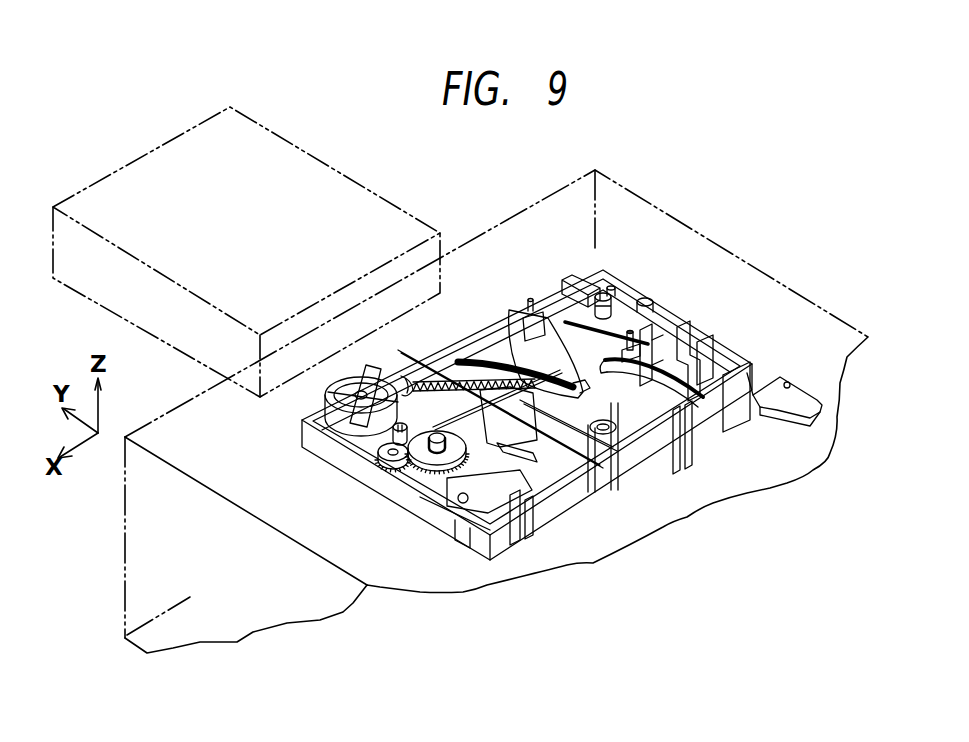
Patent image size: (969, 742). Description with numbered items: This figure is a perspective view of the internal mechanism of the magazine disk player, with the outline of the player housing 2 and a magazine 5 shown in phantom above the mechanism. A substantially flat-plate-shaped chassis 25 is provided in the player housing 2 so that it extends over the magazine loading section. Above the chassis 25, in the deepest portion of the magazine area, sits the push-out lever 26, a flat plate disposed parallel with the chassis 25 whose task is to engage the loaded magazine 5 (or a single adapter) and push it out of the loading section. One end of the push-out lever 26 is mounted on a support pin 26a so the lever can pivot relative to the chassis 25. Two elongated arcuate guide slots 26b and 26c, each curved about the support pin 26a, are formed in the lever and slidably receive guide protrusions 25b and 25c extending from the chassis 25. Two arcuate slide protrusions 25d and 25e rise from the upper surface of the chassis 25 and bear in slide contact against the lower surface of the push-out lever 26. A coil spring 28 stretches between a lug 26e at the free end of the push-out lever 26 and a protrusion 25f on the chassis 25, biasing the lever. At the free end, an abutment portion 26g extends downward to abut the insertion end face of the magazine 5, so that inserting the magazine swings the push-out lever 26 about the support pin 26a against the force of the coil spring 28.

The player housing 2 is at (725, 242).
The magazine 5 is at (197, 127).
The chassis 25 is at (370, 473).
The guide protrusion 25b is at (600, 492).
The guide protrusion 25c is at (527, 325).
The slide protrusion 25d is at (663, 420).
The slide protrusion 25e is at (687, 443).
The protrusion 25f is at (400, 375).
The push-out lever 26 is at (533, 327).
The support pin 26a is at (460, 500).
The guide slot 26b is at (497, 440).
The guide slot 26c is at (523, 322).
The lug 26e is at (620, 477).
The abutment portion 26g is at (633, 350).
The coil spring 28 is at (442, 370).